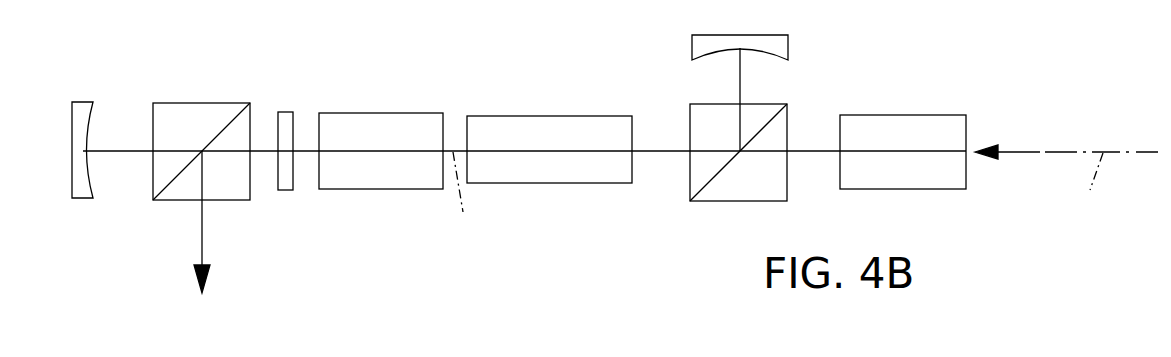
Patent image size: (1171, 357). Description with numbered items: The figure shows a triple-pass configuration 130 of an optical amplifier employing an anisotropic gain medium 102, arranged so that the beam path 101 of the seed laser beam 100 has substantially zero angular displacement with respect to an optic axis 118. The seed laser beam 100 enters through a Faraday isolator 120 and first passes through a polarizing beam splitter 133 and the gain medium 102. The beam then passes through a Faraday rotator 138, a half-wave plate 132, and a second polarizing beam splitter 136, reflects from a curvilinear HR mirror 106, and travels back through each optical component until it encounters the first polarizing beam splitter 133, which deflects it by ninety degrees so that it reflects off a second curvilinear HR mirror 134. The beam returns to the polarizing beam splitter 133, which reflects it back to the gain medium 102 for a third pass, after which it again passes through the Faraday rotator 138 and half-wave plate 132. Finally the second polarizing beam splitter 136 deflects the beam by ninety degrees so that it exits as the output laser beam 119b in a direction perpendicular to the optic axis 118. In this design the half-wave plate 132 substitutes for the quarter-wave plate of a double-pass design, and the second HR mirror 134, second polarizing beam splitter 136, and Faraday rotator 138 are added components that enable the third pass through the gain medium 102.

The seed laser beam 100 is at (1013, 155).
The beam path 101 is at (662, 153).
The anisotropic gain medium 102 is at (593, 128).
The curvilinear HR mirror 106 is at (85, 118).
The optic axis 118 is at (780, 198).
The output laser beam 119b is at (202, 243).
The Faraday isolator 120 is at (912, 117).
The triple-pass configuration 130 is at (998, 39).
The half-wave plate 132 is at (293, 118).
The polarizing beam splitter 133 is at (780, 128).
The second curvilinear HR mirror 134 is at (772, 42).
The second polarizing beam splitter 136 is at (188, 115).
The Faraday rotator 138 is at (386, 113).